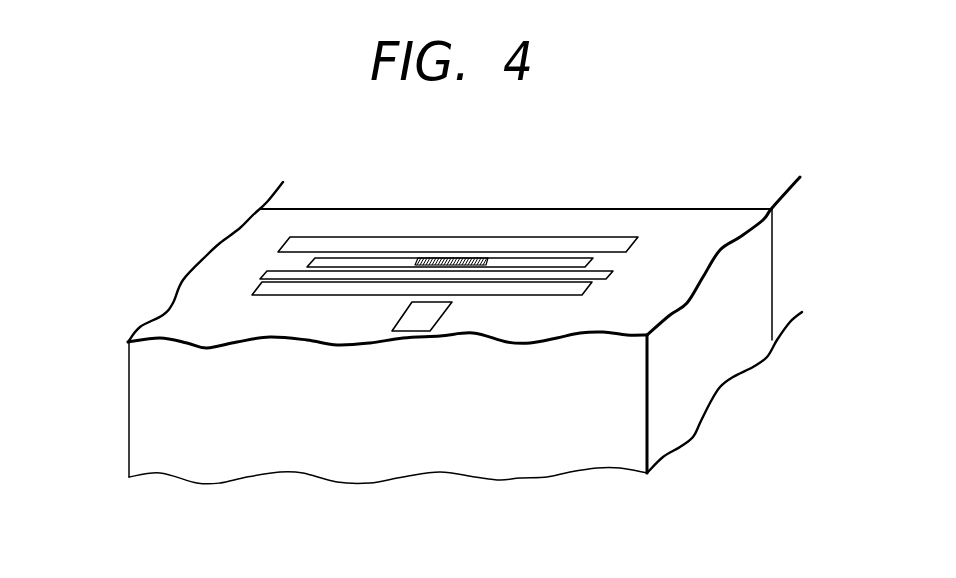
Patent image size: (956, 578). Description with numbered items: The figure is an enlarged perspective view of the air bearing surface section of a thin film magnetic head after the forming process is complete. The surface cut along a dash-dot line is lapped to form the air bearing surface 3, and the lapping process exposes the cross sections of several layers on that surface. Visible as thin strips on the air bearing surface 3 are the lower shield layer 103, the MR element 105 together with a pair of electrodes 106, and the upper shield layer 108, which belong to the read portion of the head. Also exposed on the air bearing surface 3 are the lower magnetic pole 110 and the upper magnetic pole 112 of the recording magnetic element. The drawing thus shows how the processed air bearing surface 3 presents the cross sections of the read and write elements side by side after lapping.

The air bearing surface 3 is at (210, 262).
The lower shield layer 103 is at (577, 243).
The MR element 105 is at (452, 257).
The pair of electrodes 106 is at (582, 260).
The upper shield layer 108 is at (600, 275).
The lower magnetic pole 110 is at (540, 287).
The upper magnetic pole 112 is at (413, 323).